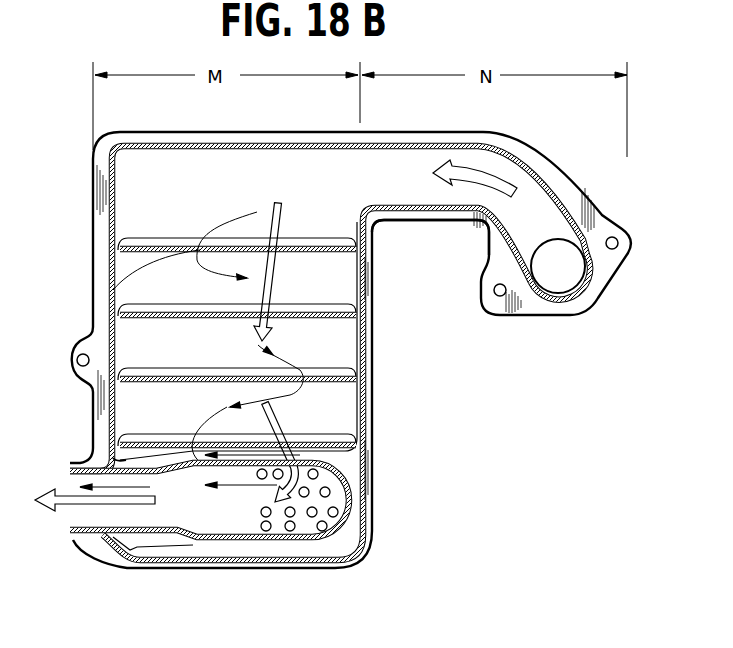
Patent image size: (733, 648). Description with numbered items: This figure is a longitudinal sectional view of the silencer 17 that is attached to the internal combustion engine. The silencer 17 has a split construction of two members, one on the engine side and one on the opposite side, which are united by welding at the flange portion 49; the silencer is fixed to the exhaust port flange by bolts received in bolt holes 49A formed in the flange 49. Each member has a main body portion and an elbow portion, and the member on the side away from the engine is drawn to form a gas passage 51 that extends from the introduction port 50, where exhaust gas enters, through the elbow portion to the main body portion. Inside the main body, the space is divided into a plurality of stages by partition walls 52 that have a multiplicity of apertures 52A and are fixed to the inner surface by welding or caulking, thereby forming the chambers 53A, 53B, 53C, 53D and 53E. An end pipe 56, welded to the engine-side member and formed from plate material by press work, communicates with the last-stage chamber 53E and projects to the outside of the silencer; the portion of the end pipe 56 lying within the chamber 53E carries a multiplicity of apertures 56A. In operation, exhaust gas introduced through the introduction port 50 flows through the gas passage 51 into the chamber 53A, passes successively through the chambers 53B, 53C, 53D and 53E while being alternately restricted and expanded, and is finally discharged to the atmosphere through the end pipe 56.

The silencer 17 is at (380, 295).
The flange portion 49 is at (603, 220).
The bolt holes 49A is at (618, 242).
The introduction port 50 is at (573, 282).
The gas passage 51 is at (397, 190).
The partition walls 52 is at (147, 247).
The apertures 52A is at (158, 253).
The chamber 53A is at (173, 193).
The chamber 53B is at (178, 299).
The chamber 53C is at (171, 352).
The chamber 53D is at (135, 412).
The chamber 53E is at (188, 546).
The end pipe 56 is at (214, 523).
The apertures 56A is at (311, 518).